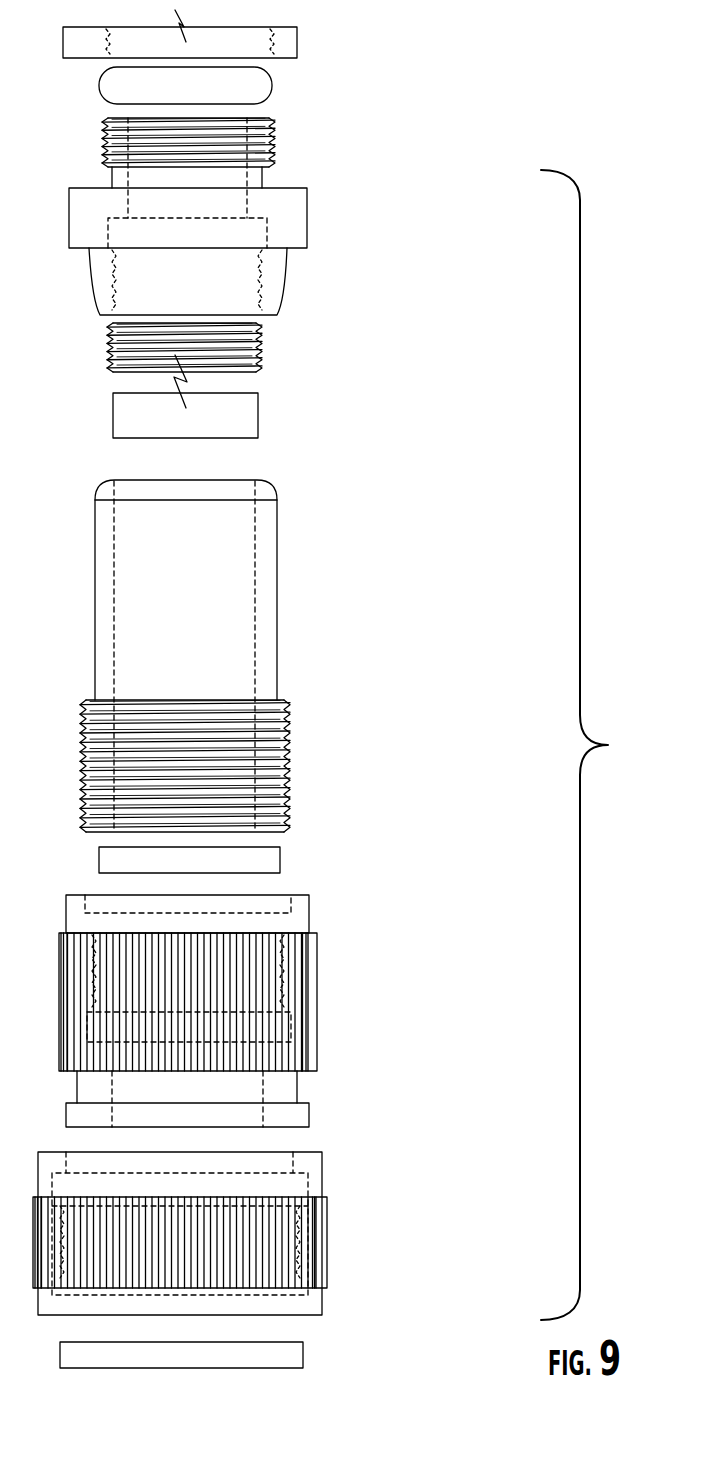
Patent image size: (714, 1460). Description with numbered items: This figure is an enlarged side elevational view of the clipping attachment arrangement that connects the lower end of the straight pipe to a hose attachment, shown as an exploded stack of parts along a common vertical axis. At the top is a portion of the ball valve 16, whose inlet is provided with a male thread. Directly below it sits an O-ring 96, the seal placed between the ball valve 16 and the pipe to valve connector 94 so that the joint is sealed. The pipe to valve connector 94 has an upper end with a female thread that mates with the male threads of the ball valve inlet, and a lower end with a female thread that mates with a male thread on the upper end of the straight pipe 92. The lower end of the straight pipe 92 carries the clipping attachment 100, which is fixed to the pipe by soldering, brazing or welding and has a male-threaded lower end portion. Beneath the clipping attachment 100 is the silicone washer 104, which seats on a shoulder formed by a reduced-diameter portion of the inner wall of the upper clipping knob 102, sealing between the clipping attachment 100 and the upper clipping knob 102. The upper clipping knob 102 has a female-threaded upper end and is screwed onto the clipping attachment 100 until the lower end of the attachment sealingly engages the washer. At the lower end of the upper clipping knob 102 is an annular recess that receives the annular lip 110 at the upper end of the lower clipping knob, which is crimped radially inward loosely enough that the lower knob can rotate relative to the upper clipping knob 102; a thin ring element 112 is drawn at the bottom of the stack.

The ball valve 16 is at (297, 32).
The O-ring 96 is at (97, 85).
The pipe to valve connector 94 is at (307, 222).
The straight pipe 92 is at (255, 425).
The clipping attachment 100 is at (277, 597).
The silicone washer 104 is at (280, 858).
The upper clipping knob 102 is at (317, 990).
The annular lip 110 is at (290, 1160).
The end washer 112 is at (303, 1355).